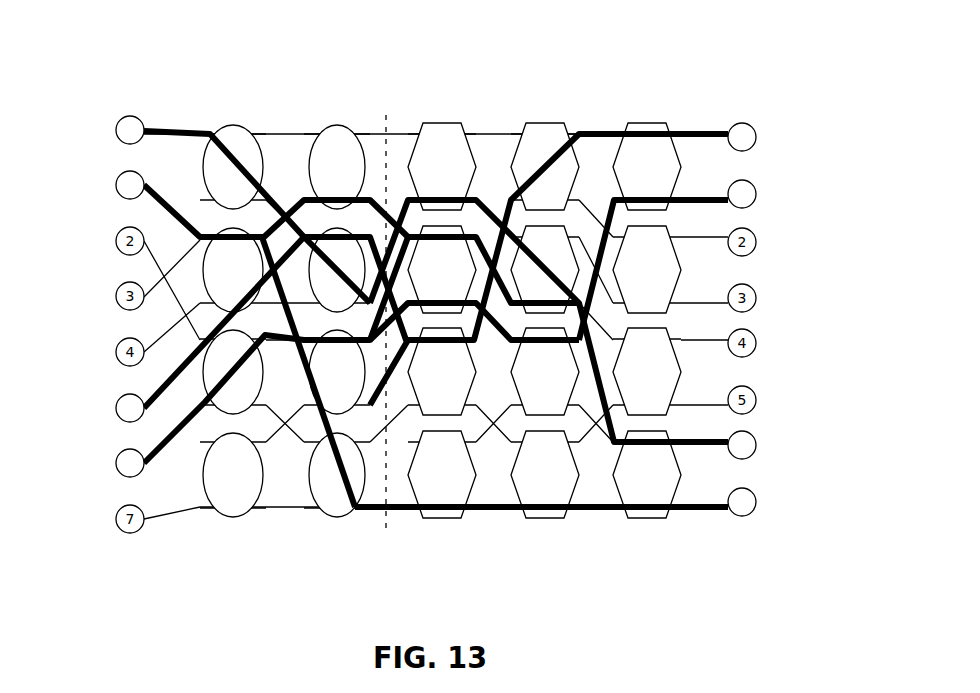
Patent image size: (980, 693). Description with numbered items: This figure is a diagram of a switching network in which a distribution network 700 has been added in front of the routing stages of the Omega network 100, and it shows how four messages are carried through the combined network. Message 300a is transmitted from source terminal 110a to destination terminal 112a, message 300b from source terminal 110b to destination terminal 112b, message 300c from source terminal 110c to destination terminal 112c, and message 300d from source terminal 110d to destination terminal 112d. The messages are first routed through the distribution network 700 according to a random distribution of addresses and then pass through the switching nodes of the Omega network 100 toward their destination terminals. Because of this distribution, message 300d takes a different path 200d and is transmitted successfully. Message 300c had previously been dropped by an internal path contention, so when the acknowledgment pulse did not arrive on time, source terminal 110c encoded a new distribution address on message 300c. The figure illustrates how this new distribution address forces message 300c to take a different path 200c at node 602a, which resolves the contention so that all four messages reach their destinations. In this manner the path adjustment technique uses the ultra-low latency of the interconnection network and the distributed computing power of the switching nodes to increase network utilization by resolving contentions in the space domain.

The Omega network 100 is at (436, 314).
The source terminal 110a is at (115, 130).
The source terminal 110b is at (115, 185).
The source terminal 110c is at (115, 408).
The source terminal 110d is at (115, 463).
The destination terminal 112a is at (762, 130).
The destination terminal 112b is at (762, 443).
The destination terminal 112c is at (762, 500).
The destination terminal 112d is at (762, 188).
The path 200c is at (595, 512).
The path 200d is at (703, 202).
The message 300a is at (168, 110).
The message 300b is at (163, 178).
The message 300c is at (148, 330).
The message 300d is at (160, 414).
The node 602a is at (350, 525).
The distribution network 700 is at (328, 359).